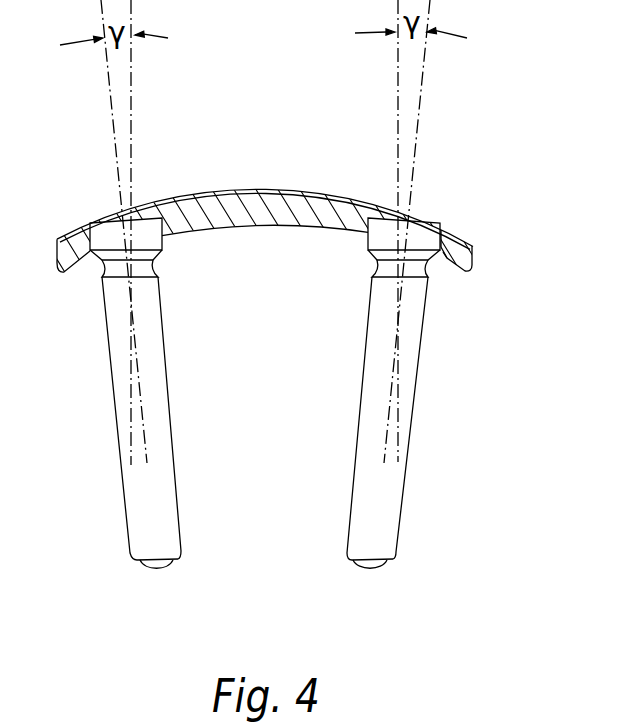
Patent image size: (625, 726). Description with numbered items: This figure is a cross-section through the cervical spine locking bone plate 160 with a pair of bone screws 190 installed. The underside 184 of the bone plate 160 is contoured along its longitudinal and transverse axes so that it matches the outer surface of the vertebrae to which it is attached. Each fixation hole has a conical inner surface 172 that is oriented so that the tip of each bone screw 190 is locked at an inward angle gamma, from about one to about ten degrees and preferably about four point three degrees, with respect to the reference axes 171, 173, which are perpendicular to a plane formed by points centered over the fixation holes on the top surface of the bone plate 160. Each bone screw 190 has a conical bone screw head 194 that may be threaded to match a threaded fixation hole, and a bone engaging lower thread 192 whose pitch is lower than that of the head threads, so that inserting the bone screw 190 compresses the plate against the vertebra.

The bone plate 160 is at (303, 188).
The axis 171 is at (136, 88).
The axis 173 is at (394, 60).
The conical inner surface 172 is at (140, 207).
The underside 184 is at (295, 233).
The bone screw 190 is at (234, 422).
The lower thread 192 is at (108, 402).
The bone screw head 194 is at (448, 261).